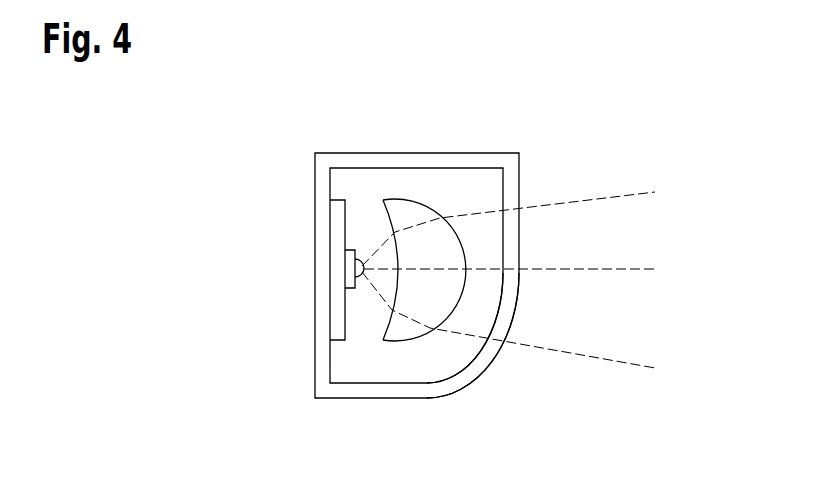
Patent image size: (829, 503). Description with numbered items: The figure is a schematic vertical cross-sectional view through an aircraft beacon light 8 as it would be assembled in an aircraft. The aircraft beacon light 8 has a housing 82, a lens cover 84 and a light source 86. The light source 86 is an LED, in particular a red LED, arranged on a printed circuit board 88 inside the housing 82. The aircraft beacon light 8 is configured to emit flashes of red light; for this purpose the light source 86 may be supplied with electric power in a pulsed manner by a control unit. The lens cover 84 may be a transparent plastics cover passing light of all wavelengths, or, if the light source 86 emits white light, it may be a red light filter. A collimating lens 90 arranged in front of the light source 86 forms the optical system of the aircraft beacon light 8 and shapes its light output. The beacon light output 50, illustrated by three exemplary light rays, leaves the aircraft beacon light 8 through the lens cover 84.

The aircraft beacon light 8 is at (606, 89).
The beacon light output 50 is at (653, 228).
The housing 82 is at (322, 267).
The lens cover 84 is at (437, 380).
The light source 86 is at (347, 282).
The printed circuit board 88 is at (337, 222).
The collimating lens 90 is at (400, 215).